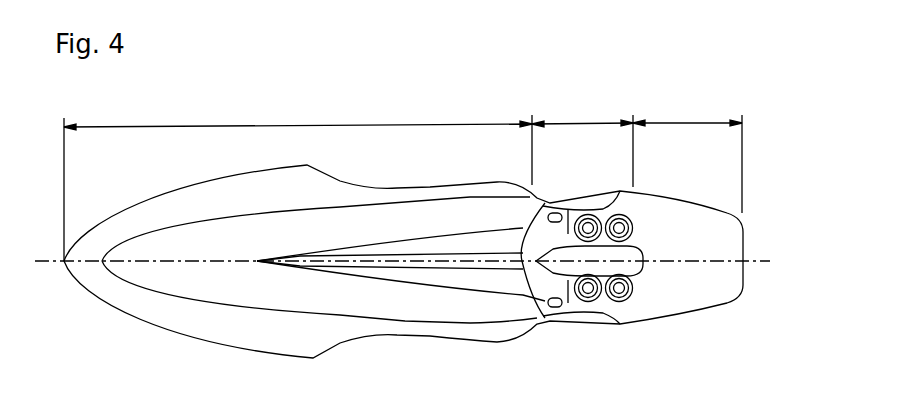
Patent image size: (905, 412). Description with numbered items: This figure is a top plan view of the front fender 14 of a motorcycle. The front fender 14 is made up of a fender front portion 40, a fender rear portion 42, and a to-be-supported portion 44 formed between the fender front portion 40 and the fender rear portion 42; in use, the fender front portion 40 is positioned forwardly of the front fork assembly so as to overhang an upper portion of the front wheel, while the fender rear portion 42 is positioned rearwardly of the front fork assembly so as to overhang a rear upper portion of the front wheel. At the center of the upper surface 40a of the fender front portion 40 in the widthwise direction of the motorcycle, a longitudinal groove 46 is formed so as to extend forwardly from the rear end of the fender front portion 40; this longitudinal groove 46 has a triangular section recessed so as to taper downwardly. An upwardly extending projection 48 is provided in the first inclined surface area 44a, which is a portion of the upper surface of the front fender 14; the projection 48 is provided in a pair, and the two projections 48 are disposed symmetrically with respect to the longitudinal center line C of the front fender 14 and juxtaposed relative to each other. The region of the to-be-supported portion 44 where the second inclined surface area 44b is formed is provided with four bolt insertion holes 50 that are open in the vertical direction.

The front fender 14 is at (139, 197).
The fender front portion 40 is at (306, 126).
The upper surface of the fender front portion 40a is at (385, 302).
The fender rear portion 42 is at (685, 121).
The to-be-supported portion 44 is at (586, 121).
The first inclined surface area 44a is at (548, 284).
The second inclined surface area 44b is at (603, 306).
The longitudinal groove 46 is at (445, 265).
The projection 48 is at (559, 212).
The bolt insertion hole 50 is at (608, 213).
The longitudinal center line C is at (694, 261).